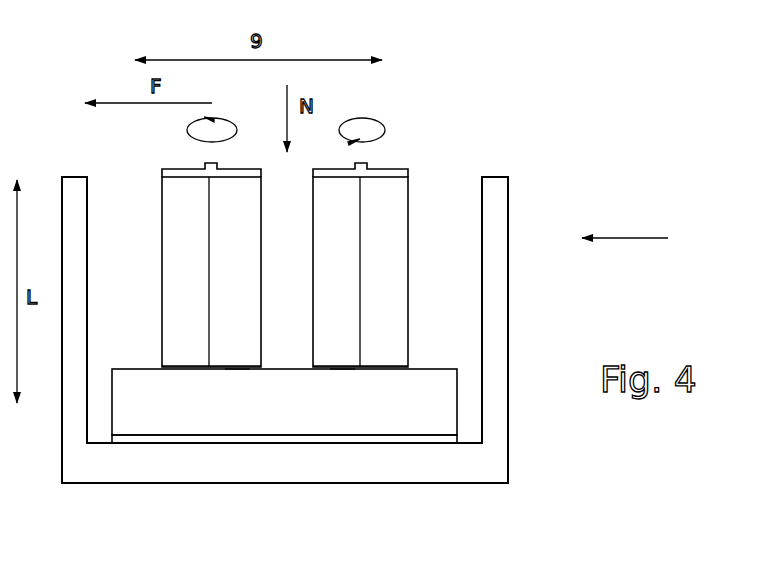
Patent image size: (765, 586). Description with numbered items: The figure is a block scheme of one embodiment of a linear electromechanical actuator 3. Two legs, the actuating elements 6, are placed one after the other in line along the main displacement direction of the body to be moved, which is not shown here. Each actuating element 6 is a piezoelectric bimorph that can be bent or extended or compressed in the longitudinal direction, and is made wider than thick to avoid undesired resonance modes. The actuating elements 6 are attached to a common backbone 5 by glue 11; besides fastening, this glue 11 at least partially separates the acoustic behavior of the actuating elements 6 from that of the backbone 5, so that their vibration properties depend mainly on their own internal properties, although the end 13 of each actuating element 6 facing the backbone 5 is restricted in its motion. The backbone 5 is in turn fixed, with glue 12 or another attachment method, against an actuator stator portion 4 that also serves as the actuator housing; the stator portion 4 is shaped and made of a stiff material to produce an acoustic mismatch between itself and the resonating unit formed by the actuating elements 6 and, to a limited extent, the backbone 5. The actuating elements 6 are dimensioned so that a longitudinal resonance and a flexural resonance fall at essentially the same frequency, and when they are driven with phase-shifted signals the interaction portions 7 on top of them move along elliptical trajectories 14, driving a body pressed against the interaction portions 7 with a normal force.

The actuator 3 is at (634, 238).
The actuator stator portion 4 is at (110, 483).
The backbone 5 is at (218, 412).
The actuating element 6 is at (193, 273).
The interaction portion 7 is at (160, 173).
The glue 11 is at (158, 365).
The glue 12 is at (315, 438).
The end of the actuating element 13 is at (235, 372).
The elliptical trajectory 14 is at (187, 132).